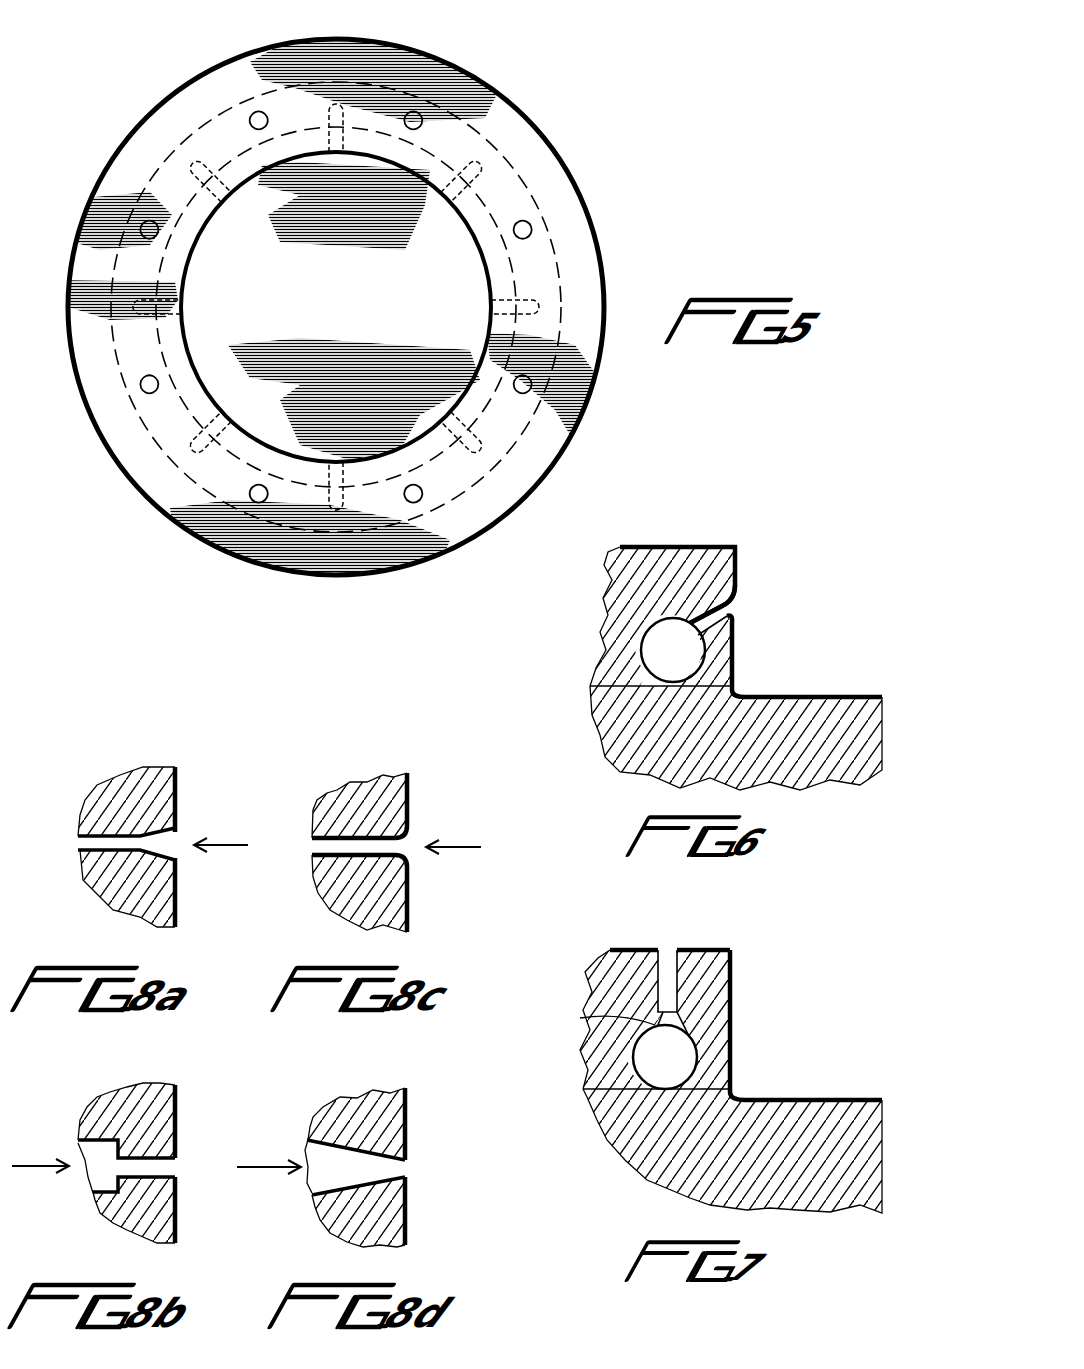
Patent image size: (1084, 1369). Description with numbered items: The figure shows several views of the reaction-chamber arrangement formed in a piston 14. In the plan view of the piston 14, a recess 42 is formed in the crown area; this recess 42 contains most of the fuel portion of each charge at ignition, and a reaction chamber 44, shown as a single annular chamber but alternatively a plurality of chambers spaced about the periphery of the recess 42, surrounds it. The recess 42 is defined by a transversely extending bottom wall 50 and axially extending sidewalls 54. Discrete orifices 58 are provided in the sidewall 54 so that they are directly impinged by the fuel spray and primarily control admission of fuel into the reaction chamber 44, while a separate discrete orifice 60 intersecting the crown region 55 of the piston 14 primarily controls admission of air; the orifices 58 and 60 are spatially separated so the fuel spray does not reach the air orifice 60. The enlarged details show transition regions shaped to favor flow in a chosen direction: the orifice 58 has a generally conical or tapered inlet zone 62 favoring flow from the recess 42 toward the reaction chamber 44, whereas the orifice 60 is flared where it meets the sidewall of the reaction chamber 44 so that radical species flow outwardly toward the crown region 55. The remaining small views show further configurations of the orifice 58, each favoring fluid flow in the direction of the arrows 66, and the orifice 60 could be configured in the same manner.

In FIG. 5, the piston 14 is at (572, 178).
In FIG. 5, the recess 42 is at (335, 310).
In FIG. 6, the recess 42 is at (848, 632).
In FIG. 7, the recess 42 is at (821, 1067).
In FIG. 5, the reaction chamber 44 is at (455, 135).
In FIG. 6, the reaction chamber 44 is at (680, 672).
In FIG. 7, the reaction chamber 44 is at (643, 1080).
In FIG. 6, the bottom wall 50 is at (867, 696).
In FIG. 6, the sidewall 54 is at (735, 668).
In FIG. 7, the sidewall 54 is at (733, 1027).
In FIG. 8A, the sidewall 54 is at (178, 793).
In FIG. 8C, the sidewall 54 is at (410, 797).
In FIG. 8B, the sidewall 54 is at (178, 1112).
In FIG. 8D, the sidewall 54 is at (408, 1135).
In FIG. 6, the crown region 55 is at (708, 545).
In FIG. 7, the crown region 55 is at (713, 950).
In FIG. 5, the orifice 58 is at (222, 185).
In FIG. 6, the orifice 58 is at (723, 617).
In FIG. 8A, the orifice 58 is at (178, 838).
In FIG. 8C, the orifice 58 is at (403, 845).
In FIG. 8B, the orifice 58 is at (175, 1166).
In FIG. 8D, the orifice 58 is at (403, 1170).
In FIG. 7, the orifice 60 is at (666, 957).
In FIG. 6, the inlet zone 62 is at (733, 602).
In FIG. 8A, the arrows 66 is at (218, 846).
In FIG. 8C, the arrows 66 is at (460, 850).
In FIG. 8B, the arrows 66 is at (32, 1168).
In FIG. 8D, the arrows 66 is at (265, 1170).